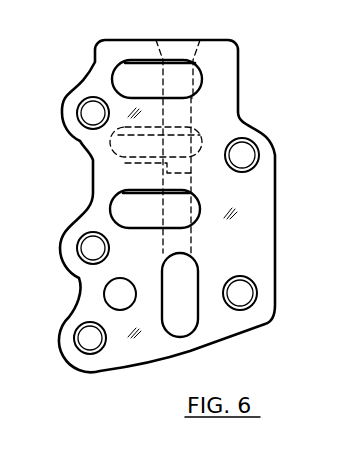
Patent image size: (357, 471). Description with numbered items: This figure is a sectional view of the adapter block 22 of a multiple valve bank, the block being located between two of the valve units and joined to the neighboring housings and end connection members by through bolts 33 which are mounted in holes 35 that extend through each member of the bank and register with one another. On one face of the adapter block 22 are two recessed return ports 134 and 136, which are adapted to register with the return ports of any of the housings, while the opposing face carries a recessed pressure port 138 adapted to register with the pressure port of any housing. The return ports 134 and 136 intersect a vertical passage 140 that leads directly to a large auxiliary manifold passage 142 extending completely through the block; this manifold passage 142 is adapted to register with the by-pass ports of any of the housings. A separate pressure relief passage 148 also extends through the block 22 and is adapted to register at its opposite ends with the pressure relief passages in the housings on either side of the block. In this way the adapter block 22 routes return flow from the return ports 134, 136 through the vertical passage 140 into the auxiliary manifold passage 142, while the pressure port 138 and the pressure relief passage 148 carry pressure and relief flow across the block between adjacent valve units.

The adapter block 22 is at (290, 82).
The through bolts 33 is at (79, 104).
The holes 35 is at (82, 115).
The recessed return port 134 is at (133, 62).
The recessed return port 136 is at (112, 204).
The recessed pressure port 138 is at (120, 162).
The vertical passage 140 is at (198, 113).
The auxiliary manifold passage 142 is at (190, 263).
The pressure relief passage 148 is at (104, 295).